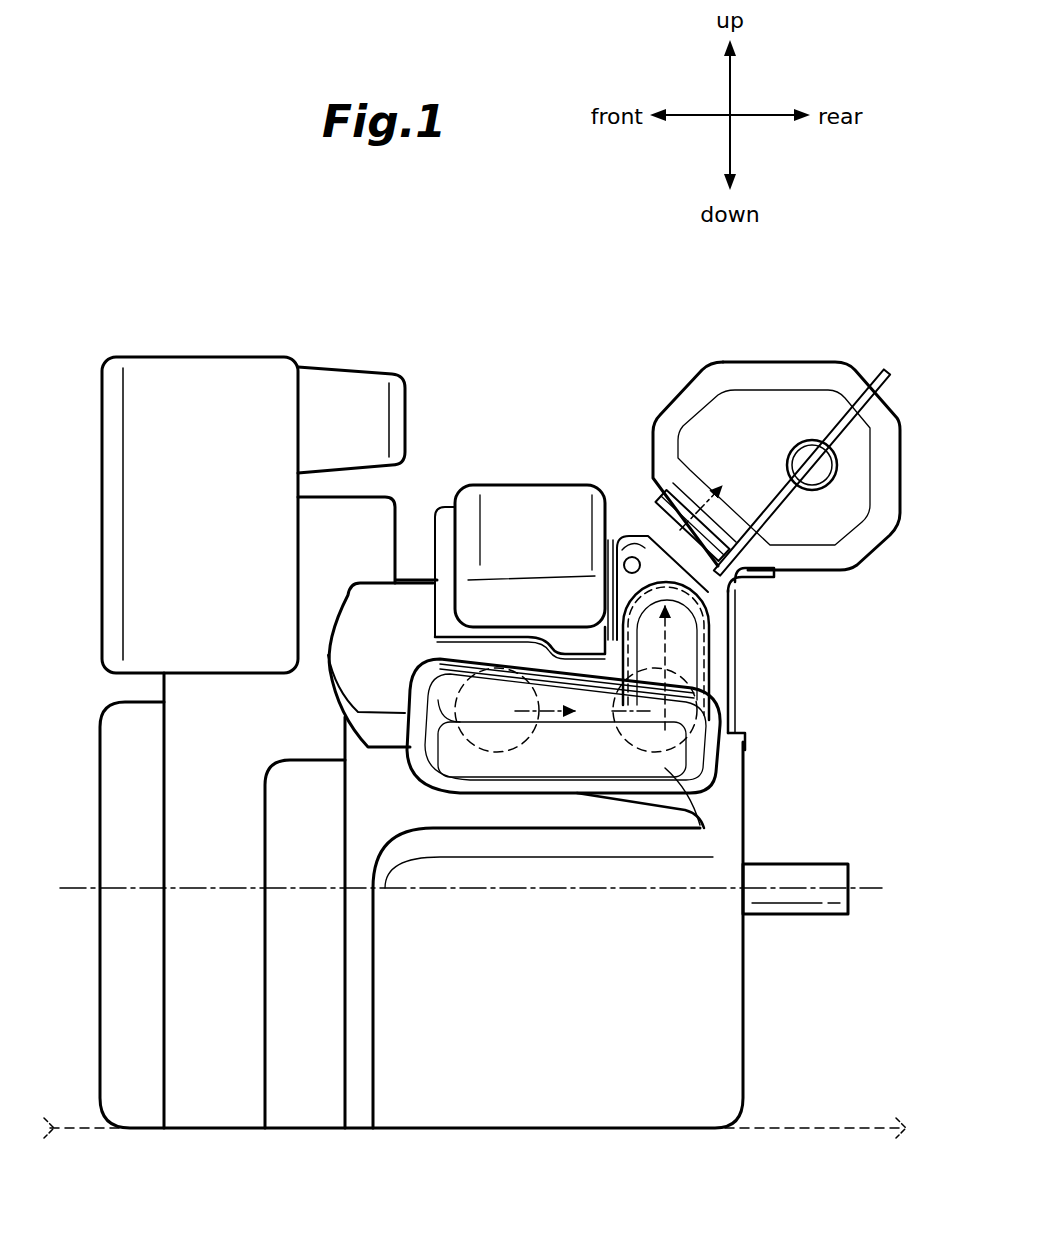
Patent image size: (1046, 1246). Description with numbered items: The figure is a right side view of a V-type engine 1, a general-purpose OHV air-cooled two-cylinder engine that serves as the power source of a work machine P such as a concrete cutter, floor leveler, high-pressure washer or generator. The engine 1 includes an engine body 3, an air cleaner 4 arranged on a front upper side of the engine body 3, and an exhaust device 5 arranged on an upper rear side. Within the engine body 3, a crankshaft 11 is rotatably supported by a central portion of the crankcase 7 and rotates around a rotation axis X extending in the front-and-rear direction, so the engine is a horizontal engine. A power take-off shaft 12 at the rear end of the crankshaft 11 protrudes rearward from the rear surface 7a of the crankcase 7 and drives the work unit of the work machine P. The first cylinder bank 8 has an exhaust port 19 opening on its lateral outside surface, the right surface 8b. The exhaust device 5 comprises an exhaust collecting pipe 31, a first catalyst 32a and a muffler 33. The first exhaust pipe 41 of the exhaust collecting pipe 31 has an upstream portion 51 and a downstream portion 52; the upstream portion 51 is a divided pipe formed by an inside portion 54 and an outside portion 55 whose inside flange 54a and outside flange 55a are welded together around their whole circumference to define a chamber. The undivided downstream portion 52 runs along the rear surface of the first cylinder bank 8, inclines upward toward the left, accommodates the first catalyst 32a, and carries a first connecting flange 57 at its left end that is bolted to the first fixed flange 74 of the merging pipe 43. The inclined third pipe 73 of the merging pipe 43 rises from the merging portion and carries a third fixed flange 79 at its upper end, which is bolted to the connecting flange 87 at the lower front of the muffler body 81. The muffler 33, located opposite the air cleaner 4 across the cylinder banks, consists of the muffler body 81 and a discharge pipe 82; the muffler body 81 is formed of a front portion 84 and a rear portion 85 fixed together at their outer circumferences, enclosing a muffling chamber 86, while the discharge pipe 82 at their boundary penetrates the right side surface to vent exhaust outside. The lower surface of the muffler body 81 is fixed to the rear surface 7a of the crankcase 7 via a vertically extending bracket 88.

The engine 1 is at (203, 214).
The engine body 3 is at (768, 1074).
The air cleaner 4 is at (188, 346).
The exhaust device 5 is at (910, 382).
The crankcase 7 is at (748, 1040).
The rear surface of crankcase 7a is at (743, 985).
The first cylinder bank 8 is at (449, 496).
The right surface of first cylinder bank 8b is at (472, 648).
The crankshaft 11 is at (840, 922).
The power take-off shaft 12 is at (832, 864).
The exhaust port 19 is at (455, 650).
The exhaust collecting pipe 31 is at (737, 711).
The first catalyst 32a is at (737, 625).
The muffler 33 is at (680, 385).
The first exhaust pipe 41 is at (722, 667).
The merging pipe 43 is at (645, 528).
The upstream portion 51 is at (728, 752).
The downstream portion 52 is at (735, 648).
The inside portion 54 is at (737, 599).
The inside flange 54a is at (775, 575).
The outside portion 55 is at (720, 772).
The outside flange 55a is at (700, 832).
The first connecting flange 57 is at (598, 625).
The third pipe 73 is at (655, 530).
The first fixed flange 74 is at (622, 556).
The third fixed flange 79 is at (642, 525).
The muffler body 81 is at (779, 352).
The discharge pipe 82 is at (745, 393).
The front portion 84 is at (655, 437).
The rear portion 85 is at (900, 440).
The muffling chamber 86 is at (816, 402).
The connecting flange 87 is at (613, 650).
The bracket 88 is at (738, 727).
The rotation axis X is at (480, 889).
The work machine P is at (862, 1118).